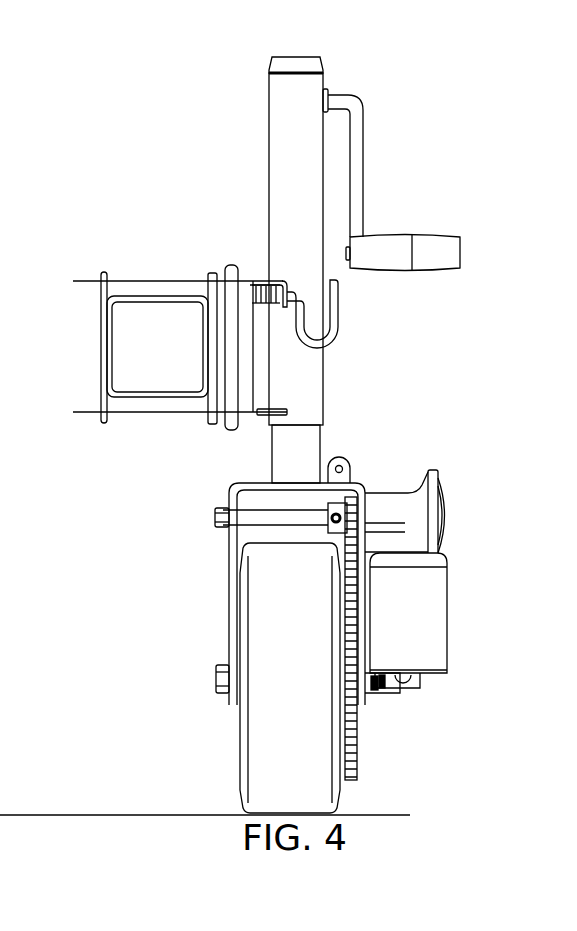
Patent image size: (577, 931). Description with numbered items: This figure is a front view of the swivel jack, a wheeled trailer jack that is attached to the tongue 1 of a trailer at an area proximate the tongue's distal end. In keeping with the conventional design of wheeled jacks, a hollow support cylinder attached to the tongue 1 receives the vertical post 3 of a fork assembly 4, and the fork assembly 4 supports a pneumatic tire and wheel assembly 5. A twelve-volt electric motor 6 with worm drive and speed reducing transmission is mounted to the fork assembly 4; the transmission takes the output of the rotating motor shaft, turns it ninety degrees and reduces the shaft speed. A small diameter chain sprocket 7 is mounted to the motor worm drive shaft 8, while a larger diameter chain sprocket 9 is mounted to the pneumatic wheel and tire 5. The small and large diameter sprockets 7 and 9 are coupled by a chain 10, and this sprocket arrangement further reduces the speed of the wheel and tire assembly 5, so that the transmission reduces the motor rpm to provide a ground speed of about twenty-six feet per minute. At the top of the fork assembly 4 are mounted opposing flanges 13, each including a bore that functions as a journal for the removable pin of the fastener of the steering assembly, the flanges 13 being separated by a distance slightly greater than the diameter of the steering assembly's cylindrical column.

The tongue 1 is at (158, 298).
The vertical post 3 is at (268, 476).
The fork assembly 4 is at (233, 583).
The pneumatic tire and wheel assembly 5 is at (257, 742).
The electric motor 6 is at (447, 612).
The chain sprocket 7 is at (349, 500).
The motor worm drive shaft 8 is at (270, 521).
The chain sprocket 9 is at (353, 768).
The chain 10 is at (353, 578).
The flanges 13 is at (343, 458).